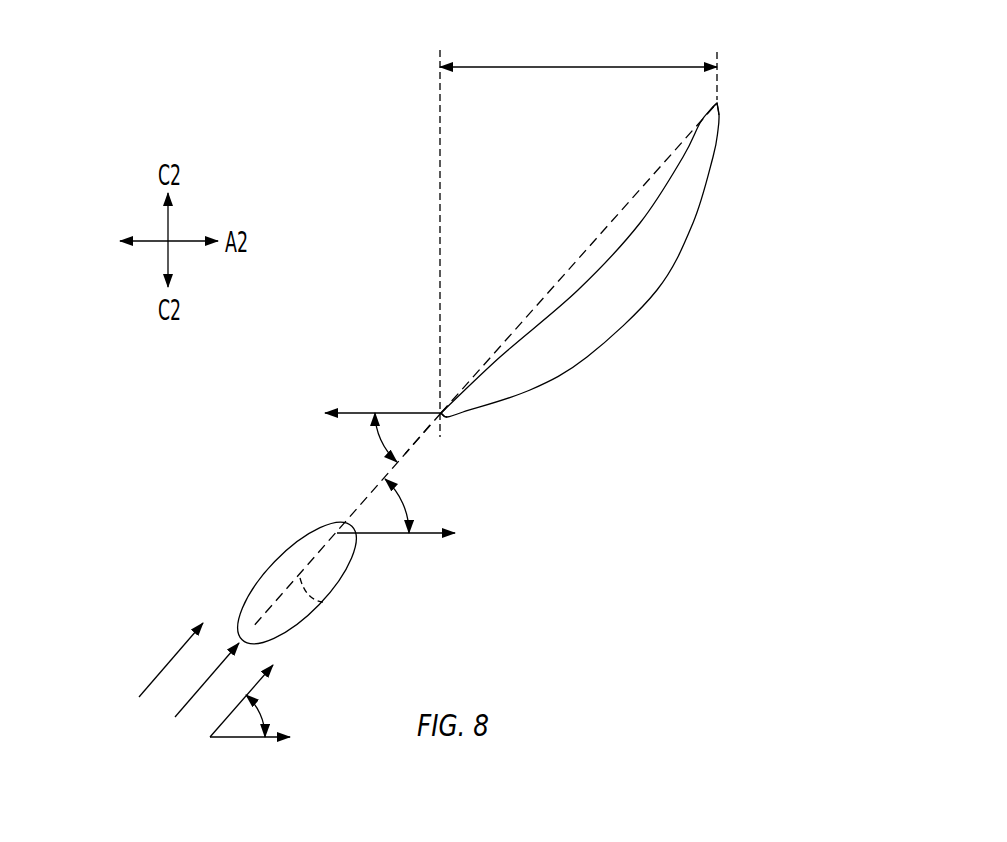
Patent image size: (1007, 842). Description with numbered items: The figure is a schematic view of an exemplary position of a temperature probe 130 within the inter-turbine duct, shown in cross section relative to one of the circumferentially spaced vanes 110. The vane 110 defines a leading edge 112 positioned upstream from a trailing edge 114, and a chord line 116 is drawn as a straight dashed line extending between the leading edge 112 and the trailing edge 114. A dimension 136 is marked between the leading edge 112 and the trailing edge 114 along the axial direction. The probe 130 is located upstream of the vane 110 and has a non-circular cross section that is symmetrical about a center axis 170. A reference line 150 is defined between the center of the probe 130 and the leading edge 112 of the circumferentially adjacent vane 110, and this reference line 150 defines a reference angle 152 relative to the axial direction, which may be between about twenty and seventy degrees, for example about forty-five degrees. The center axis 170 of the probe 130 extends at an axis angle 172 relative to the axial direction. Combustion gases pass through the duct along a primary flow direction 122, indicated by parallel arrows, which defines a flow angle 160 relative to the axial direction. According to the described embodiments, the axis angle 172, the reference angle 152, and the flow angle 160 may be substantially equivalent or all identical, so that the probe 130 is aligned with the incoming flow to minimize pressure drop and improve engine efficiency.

The vane 110 is at (650, 297).
The leading edge 112 is at (437, 410).
The trailing edge 114 is at (722, 100).
The chord line 116 is at (633, 196).
The flow direction 122 is at (163, 663).
The probe 130 is at (258, 578).
The axial projection length 136 is at (581, 67).
The reference line 150 is at (418, 447).
The reference angle 152 is at (373, 440).
The flow angle 160 is at (267, 715).
The center axis 170 is at (323, 602).
The axis angle 172 is at (407, 498).